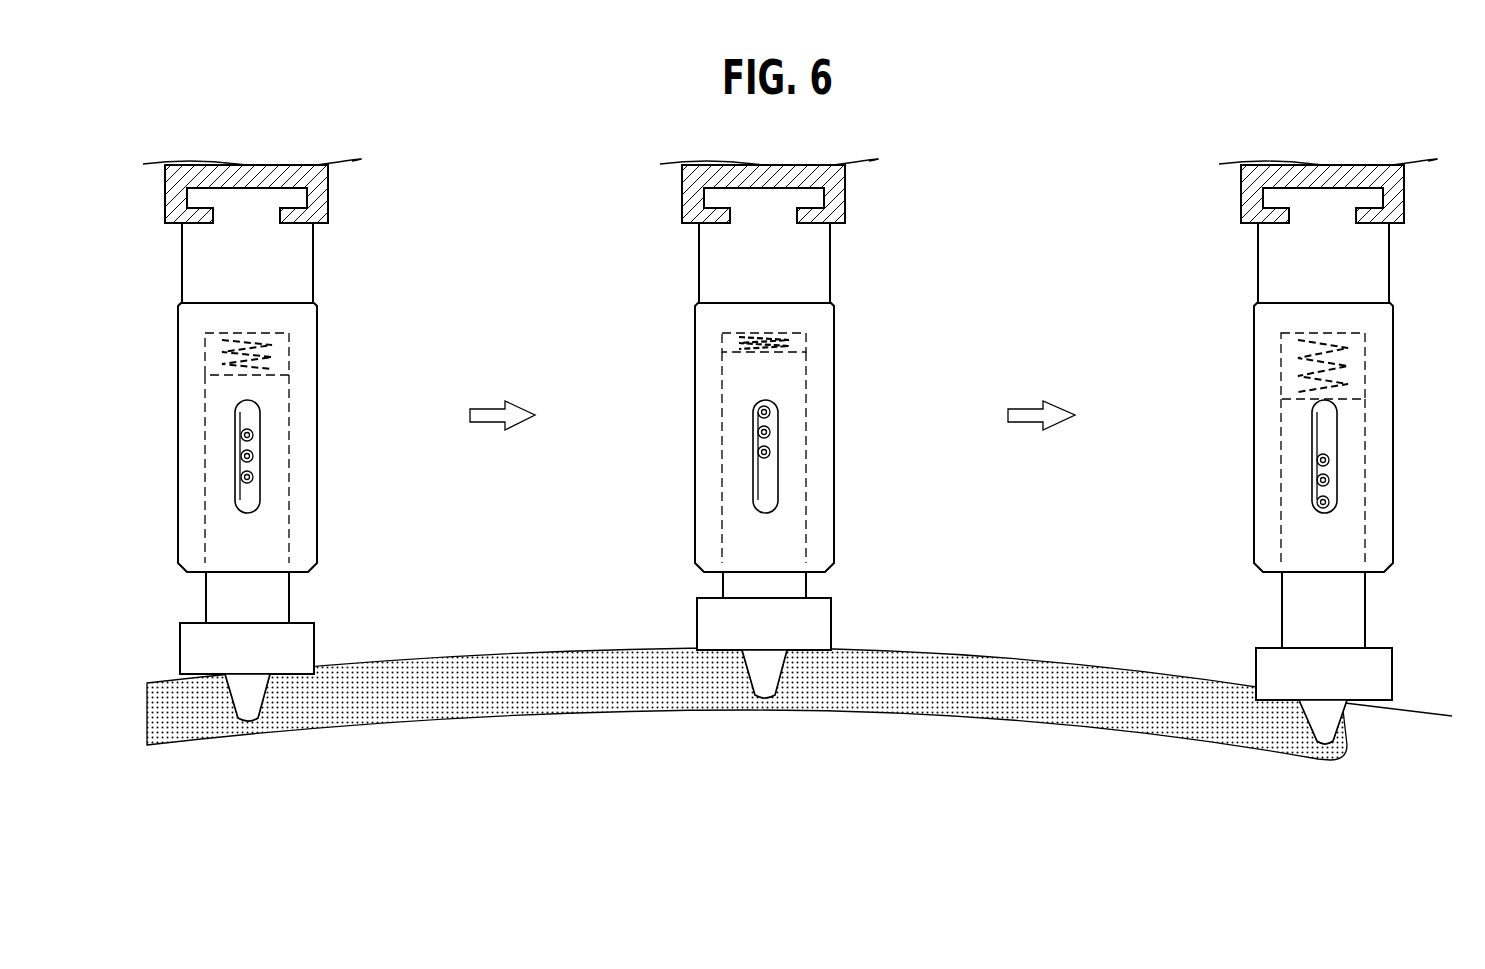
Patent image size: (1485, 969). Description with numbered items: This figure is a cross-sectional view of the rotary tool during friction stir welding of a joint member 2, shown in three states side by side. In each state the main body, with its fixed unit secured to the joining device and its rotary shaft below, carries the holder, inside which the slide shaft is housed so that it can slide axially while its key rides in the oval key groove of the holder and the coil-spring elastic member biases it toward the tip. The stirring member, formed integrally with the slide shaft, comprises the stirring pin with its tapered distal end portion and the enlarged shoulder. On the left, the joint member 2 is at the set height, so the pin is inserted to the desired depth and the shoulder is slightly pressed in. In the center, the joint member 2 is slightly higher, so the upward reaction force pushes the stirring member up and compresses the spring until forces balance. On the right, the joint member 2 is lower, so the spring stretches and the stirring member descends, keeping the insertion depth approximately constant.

The joint member 2 is at (538, 770).